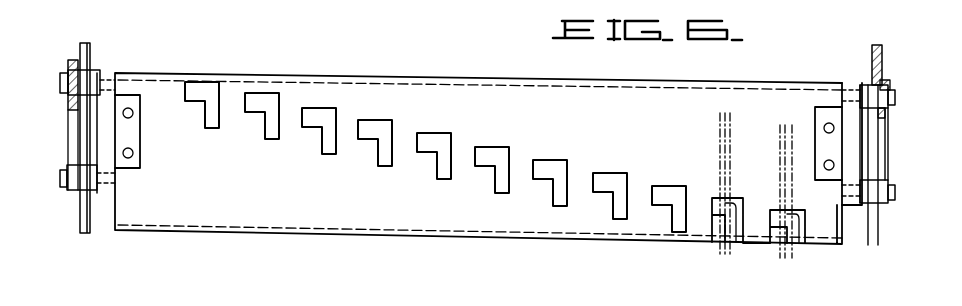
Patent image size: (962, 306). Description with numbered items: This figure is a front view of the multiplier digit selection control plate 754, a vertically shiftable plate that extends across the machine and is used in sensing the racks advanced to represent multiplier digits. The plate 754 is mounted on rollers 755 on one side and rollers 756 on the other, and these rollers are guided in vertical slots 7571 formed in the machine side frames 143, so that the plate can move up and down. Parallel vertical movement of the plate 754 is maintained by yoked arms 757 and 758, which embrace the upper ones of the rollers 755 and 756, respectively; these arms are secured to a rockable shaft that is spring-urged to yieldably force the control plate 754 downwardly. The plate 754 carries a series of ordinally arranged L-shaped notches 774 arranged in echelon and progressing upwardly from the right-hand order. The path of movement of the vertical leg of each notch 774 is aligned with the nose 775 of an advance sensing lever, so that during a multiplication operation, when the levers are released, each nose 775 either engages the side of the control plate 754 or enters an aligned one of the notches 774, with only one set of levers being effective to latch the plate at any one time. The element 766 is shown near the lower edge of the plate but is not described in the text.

The machine side frame 143 is at (88, 50).
The control plate 754 is at (778, 82).
The roller 755 is at (882, 93).
The roller 756 is at (96, 72).
The yoked arm 757 is at (891, 83).
The yoked arm 758 is at (70, 64).
The vertical slot 7571 is at (86, 147).
The bottom flange 766 is at (767, 238).
The L-shaped notch 774 is at (734, 200).
The nose 775 is at (796, 247).